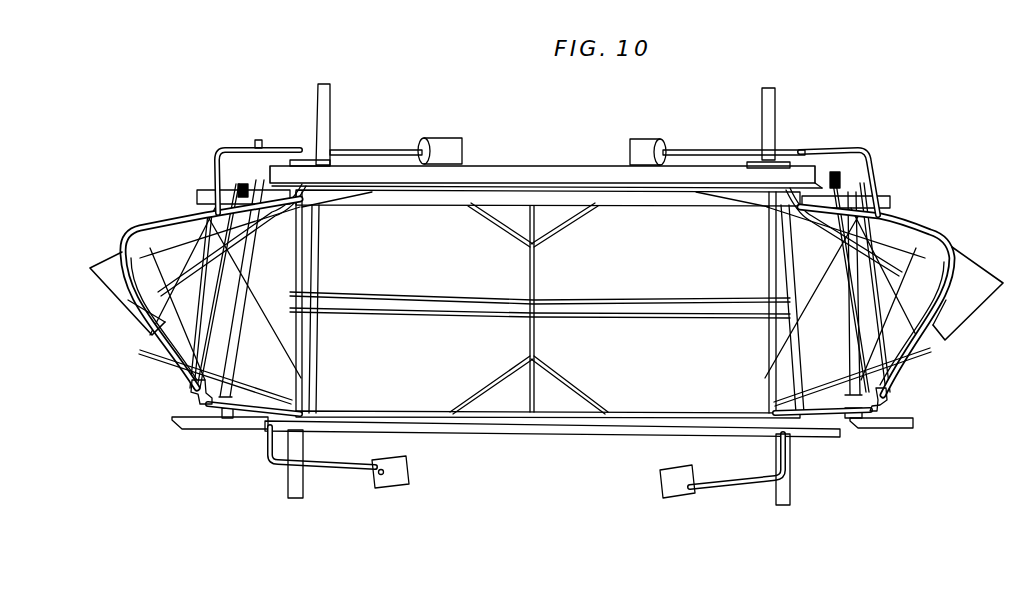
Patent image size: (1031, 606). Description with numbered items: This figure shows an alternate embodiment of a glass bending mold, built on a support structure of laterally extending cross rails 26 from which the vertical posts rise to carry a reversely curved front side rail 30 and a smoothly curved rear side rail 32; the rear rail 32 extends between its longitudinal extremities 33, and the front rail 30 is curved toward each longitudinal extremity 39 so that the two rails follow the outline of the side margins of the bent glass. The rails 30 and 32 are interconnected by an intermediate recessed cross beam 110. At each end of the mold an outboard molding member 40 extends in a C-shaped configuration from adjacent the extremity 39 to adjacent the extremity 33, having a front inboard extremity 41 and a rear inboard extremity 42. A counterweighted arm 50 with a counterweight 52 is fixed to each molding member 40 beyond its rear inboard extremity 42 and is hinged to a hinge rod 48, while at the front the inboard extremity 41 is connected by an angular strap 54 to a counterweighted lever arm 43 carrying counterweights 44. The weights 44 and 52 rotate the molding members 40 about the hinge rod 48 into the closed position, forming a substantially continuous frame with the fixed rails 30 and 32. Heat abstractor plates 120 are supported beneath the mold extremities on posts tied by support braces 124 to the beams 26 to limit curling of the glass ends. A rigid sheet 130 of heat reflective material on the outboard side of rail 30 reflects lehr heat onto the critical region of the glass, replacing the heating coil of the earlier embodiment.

The rigid sheet of heat reflective material 130 is at (527, 176).
The reversely curved front side rail 30 is at (414, 190).
The intermediate recessed cross beam 110 is at (536, 279).
The rear side rail 32 is at (406, 412).
The cross rails 26 is at (313, 281).
The support braces 124 is at (272, 238).
The hinge rod 48 is at (243, 297).
The front inboard extremity 41 is at (228, 222).
The longitudinal extremity of rail 30 39 is at (242, 200).
The outboard molding members 40 is at (124, 236).
The angular strap 54 is at (878, 162).
The heat abstractor plates 120 is at (546, 293).
The rear inboard extremity 42 is at (190, 392).
The longitudinal extremity of rail 32 33 is at (246, 381).
The counterweighted lever arm 43 is at (358, 156).
The counterweights 44 is at (446, 150).
The counterweighted arm 50 is at (340, 468).
The counterweight 52 is at (407, 468).